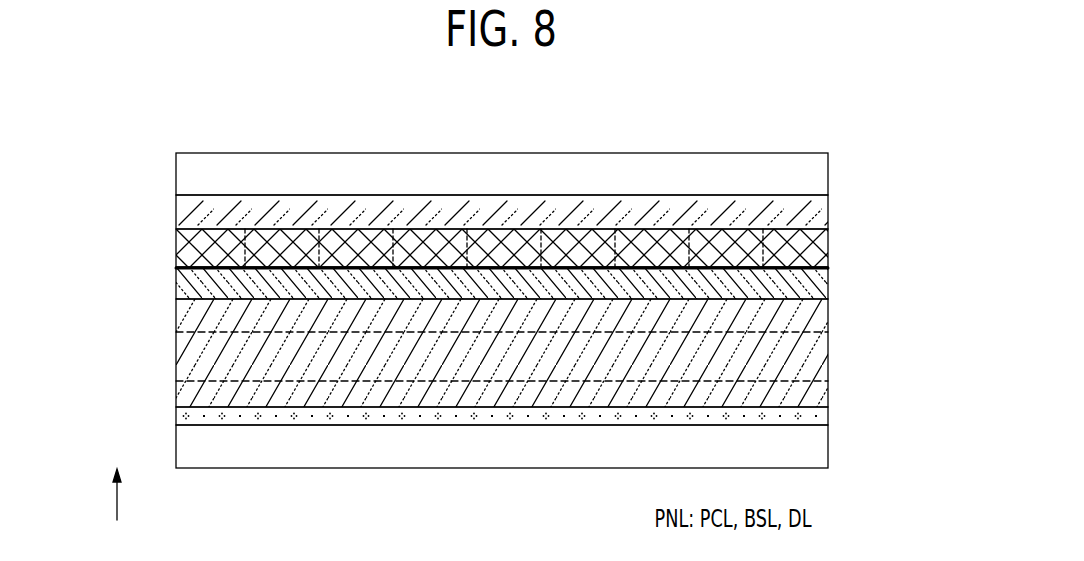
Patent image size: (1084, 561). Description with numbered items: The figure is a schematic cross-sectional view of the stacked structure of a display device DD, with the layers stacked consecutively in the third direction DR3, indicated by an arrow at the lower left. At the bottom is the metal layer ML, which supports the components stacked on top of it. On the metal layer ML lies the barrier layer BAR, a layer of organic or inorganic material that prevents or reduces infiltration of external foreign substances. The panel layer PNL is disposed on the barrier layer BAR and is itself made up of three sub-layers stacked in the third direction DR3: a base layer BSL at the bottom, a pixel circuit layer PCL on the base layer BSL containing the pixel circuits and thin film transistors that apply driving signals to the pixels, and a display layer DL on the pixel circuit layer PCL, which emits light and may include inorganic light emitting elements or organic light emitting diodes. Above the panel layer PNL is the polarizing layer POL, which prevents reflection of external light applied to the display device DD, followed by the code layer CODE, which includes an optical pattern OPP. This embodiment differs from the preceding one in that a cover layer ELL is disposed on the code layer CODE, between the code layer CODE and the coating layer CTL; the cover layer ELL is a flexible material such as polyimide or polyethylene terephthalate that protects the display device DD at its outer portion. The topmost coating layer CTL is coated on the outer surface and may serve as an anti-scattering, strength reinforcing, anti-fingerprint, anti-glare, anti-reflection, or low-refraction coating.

The display device DD is at (758, 130).
The coating layer CTL is at (828, 169).
The cover layer ELL is at (828, 206).
The code layer CODE is at (828, 241).
The optical pattern OPP is at (178, 246).
The polarizing layer POL is at (828, 281).
The panel layer PNL is at (828, 347).
The display layer DL is at (178, 317).
The pixel circuit layer PCL is at (178, 358).
The base layer BSL is at (178, 395).
The barrier layer BAR is at (828, 411).
The metal layer ML is at (828, 452).
The third direction DR3 is at (117, 478).